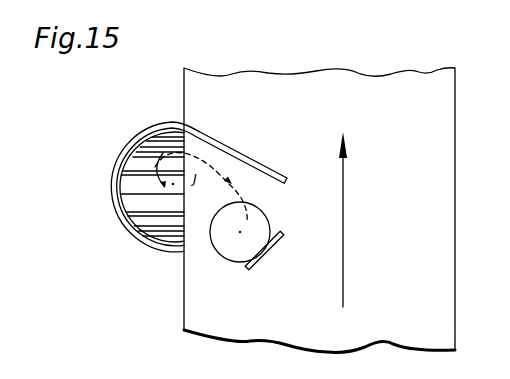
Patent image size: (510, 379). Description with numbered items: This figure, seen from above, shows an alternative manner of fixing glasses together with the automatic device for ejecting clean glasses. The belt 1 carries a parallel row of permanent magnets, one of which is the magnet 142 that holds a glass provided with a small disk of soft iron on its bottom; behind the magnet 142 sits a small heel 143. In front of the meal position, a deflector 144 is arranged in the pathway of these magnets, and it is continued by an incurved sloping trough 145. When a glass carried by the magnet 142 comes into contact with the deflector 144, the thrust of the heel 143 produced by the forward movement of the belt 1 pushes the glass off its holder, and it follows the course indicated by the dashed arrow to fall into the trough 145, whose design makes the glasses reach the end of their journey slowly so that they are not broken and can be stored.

The plate / support wall 1 is at (198, 320).
The permanent magnet 142 is at (227, 245).
The heel 143 is at (256, 259).
The deflector 144 is at (248, 163).
The incurved sloping trough 145 is at (158, 213).